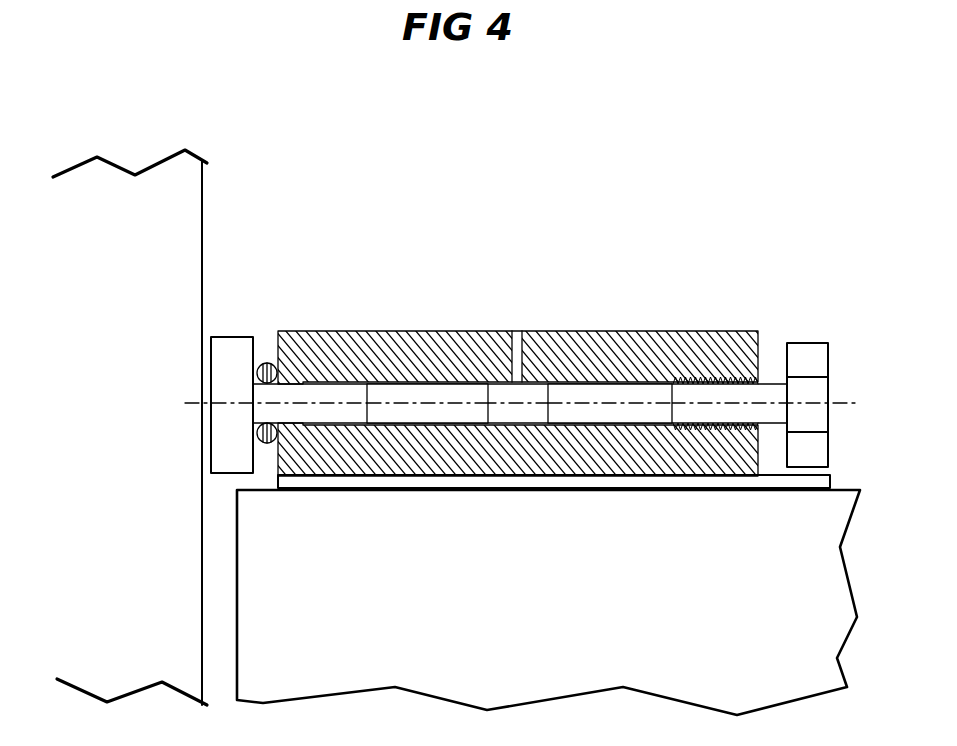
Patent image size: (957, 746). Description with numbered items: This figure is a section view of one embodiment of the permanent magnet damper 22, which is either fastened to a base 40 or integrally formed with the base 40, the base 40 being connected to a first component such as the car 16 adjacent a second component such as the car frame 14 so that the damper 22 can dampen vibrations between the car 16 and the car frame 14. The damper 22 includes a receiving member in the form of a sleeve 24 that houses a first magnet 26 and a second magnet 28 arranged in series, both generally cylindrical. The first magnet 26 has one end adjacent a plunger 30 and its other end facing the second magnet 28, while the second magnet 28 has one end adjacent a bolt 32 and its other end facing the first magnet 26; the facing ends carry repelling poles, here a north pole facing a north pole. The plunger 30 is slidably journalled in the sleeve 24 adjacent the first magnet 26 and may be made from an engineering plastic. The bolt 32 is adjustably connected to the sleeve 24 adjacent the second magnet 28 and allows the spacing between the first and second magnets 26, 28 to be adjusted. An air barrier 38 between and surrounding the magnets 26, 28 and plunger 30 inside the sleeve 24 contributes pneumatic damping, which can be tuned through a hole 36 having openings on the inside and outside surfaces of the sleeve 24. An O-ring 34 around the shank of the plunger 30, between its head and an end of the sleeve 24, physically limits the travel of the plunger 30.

The car frame 14 is at (203, 275).
The car 16 is at (838, 487).
The permanent magnet damper 22 is at (547, 235).
The sleeve 24 is at (637, 332).
The first magnet 26 is at (412, 384).
The second magnet 28 is at (608, 424).
The plunger 30 is at (220, 375).
The bolt 32 is at (812, 382).
The O-ring 34 is at (267, 362).
The hole 36 is at (522, 357).
The air barrier 38 is at (509, 420).
The base 40 is at (727, 483).